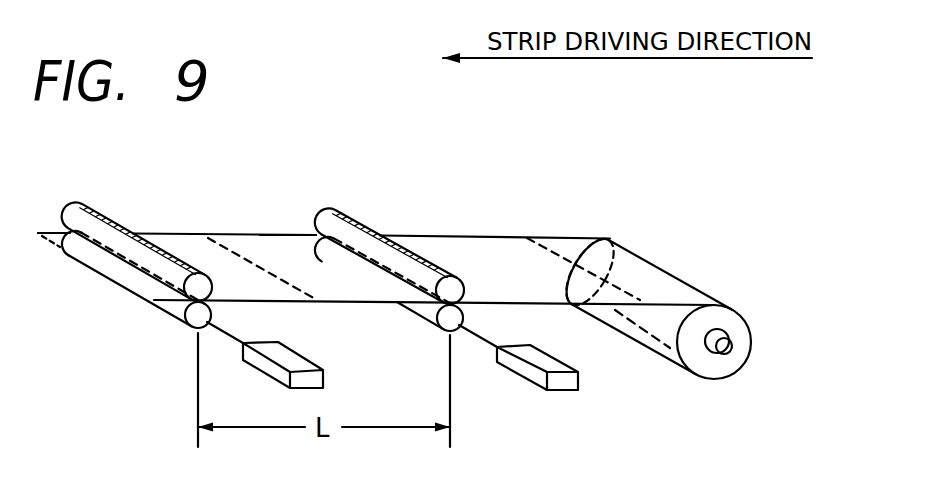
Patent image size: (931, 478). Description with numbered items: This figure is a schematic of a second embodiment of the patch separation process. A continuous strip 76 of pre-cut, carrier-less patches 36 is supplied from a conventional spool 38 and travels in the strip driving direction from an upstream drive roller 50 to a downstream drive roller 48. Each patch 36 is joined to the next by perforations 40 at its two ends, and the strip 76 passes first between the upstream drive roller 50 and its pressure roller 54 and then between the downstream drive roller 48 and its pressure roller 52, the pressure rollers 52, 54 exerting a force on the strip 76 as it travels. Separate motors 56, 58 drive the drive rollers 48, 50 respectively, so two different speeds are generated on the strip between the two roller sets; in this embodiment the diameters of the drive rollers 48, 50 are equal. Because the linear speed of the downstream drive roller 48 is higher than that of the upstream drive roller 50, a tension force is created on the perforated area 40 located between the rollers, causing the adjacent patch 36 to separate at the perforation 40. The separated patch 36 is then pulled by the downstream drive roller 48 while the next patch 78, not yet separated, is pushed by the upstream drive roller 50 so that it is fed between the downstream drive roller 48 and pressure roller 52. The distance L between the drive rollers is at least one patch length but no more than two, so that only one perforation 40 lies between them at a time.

The patch 36 is at (187, 247).
The spool 38 is at (723, 350).
The perforations 40 is at (260, 268).
The downstream drive roller 48 is at (200, 316).
The upstream drive roller 50 is at (455, 321).
The pressure roller 52 is at (103, 215).
The pressure roller 54 is at (362, 222).
The motor 56 is at (325, 377).
The motor 58 is at (560, 395).
The continuous strip 76 is at (692, 287).
The next patch 78 is at (285, 247).